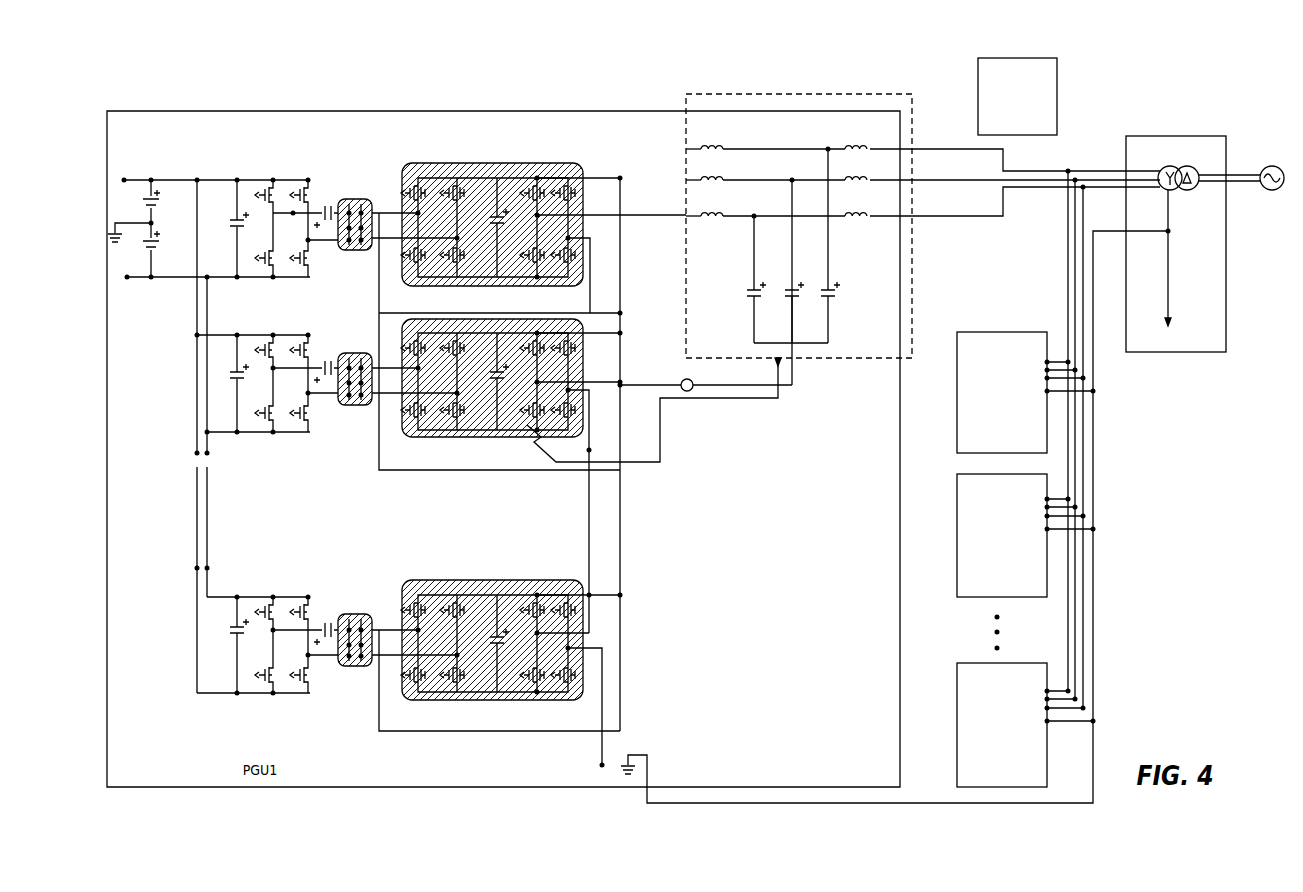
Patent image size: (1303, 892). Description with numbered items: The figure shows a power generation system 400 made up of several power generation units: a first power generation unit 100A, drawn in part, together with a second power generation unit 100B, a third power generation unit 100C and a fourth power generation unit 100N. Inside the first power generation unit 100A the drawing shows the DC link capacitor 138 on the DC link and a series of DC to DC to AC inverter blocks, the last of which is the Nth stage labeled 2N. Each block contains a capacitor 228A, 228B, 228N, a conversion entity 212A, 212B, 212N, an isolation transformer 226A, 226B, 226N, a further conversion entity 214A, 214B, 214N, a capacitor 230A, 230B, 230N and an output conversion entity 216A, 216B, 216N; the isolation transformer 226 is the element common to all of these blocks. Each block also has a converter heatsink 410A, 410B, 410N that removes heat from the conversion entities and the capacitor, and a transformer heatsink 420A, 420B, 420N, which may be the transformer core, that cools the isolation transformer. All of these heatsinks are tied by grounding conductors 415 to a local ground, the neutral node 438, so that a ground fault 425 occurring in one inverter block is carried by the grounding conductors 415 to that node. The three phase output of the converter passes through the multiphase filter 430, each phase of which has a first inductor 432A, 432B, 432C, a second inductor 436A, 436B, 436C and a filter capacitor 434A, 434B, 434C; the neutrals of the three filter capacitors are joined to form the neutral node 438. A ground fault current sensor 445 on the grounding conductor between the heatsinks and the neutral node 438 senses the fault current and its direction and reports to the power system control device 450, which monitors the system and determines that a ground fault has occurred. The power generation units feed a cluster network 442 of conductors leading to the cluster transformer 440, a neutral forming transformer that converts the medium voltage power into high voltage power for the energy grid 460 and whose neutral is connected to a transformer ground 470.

The first power generation unit 100A is at (503, 449).
The second power generation unit 100B is at (1026, 392).
The third power generation unit 100C is at (1026, 535).
The fourth power generation unit 100N is at (1026, 725).
The isolation transformer 226 is at (150, 178).
The DC link capacitor 138 is at (170, 206).
The capacitor 228A is at (236, 214).
The capacitor 228B is at (236, 368).
The capacitor 228N is at (232, 625).
The conversion entity 212A is at (312, 174).
The conversion entity 212B is at (312, 329).
The conversion entity 212N is at (312, 591).
The isolation transformer 226A is at (355, 197).
The isolation transformer 226B is at (350, 350).
The isolation transformer 226N is at (350, 612).
The transformer heatsink 420A is at (370, 198).
The transformer heatsink 420B is at (372, 352).
The transformer heatsink 420N is at (372, 614).
The converter heatsink 410A is at (492, 214).
The converter heatsink 410B is at (485, 376).
The converter heatsink 410N is at (492, 657).
The conversion entity 214A is at (462, 160).
The conversion entity 214B is at (410, 317).
The conversion entity 214N is at (462, 578).
The conversion entity 216A is at (583, 160).
The conversion entity 216B is at (583, 317).
The conversion entity 216N is at (583, 578).
The capacitor 230A is at (490, 240).
The capacitor 230B is at (490, 395).
The capacitor 230N is at (490, 658).
The Nth stage 2N is at (334, 690).
The ground fault 425 is at (540, 466).
The grounding conductors 415 is at (622, 548).
The ground fault current sensor 445 is at (692, 391).
The neutral node 438 is at (800, 352).
The multiphase filter 430 is at (762, 213).
The first inductor 432A is at (724, 147).
The first inductor 432B is at (724, 178).
The first inductor 432C is at (724, 214).
The second inductor 436A is at (868, 147).
The second inductor 436B is at (868, 178).
The second inductor 436C is at (868, 214).
The filter capacitor 434A is at (831, 286).
The filter capacitor 434B is at (795, 286).
The filter capacitor 434C is at (757, 286).
The cluster network 442 is at (1128, 455).
The power system control device 450 is at (1058, 92).
The cluster transformer 440 is at (1185, 132).
The energy grid 460 is at (1272, 134).
The transformer ground 470 is at (1180, 330).
The power generation system 400 is at (1142, 58).